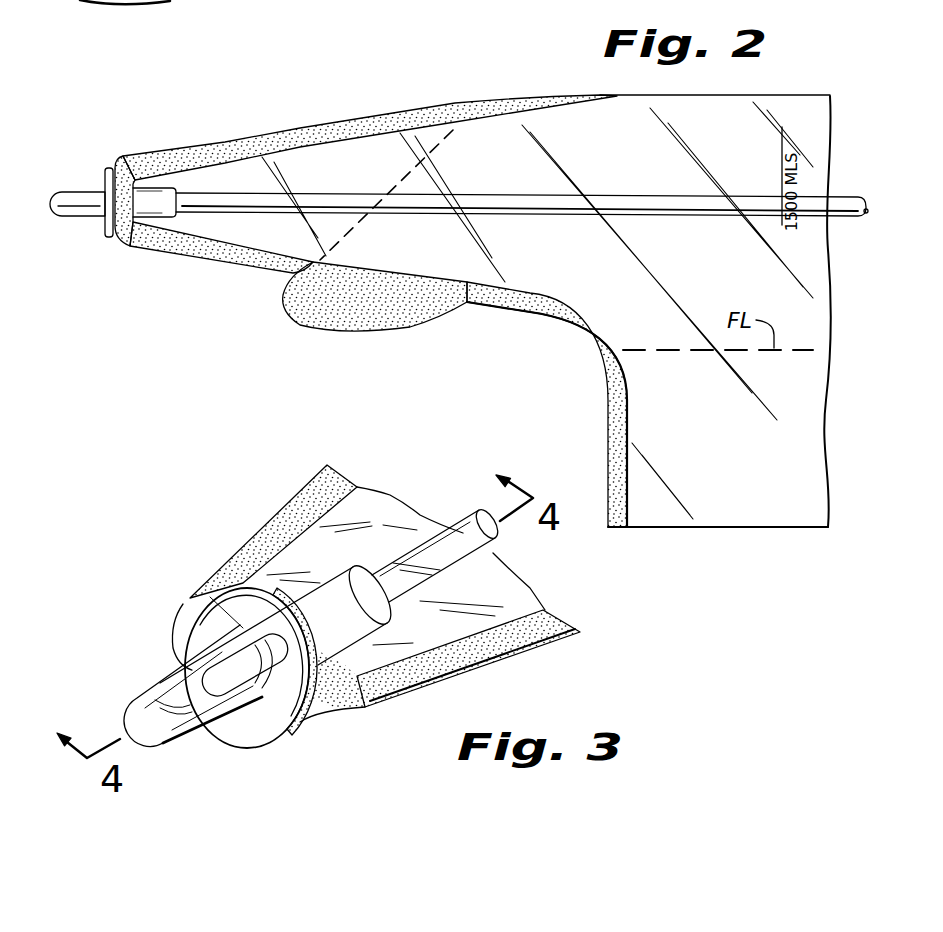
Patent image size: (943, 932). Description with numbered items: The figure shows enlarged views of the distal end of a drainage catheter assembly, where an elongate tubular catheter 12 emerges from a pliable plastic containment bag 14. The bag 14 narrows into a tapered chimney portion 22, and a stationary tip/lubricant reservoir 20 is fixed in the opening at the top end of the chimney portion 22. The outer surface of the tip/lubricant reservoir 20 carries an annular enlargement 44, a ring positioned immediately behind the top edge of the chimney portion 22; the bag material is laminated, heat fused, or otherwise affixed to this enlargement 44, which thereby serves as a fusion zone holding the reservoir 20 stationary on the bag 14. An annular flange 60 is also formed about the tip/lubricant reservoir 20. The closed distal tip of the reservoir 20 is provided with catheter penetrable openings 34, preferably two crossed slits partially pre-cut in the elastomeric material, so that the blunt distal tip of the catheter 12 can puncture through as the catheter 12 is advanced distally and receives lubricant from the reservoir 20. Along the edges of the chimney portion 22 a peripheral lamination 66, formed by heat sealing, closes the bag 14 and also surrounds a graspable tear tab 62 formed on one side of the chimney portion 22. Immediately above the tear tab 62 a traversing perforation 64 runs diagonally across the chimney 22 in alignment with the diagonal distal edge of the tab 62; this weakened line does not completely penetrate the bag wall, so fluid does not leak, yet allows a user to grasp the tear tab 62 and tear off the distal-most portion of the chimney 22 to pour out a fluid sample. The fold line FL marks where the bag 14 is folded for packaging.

In FIG. 2, the elongate tubular catheter 12 is at (843, 217).
In FIG. 3, the elongate tubular catheter 12 is at (468, 515).
In FIG. 3, the containment bag 14 is at (527, 583).
In FIG. 2, the tip/lubricant reservoir 20 is at (73, 200).
In FIG. 3, the tip/lubricant reservoir 20 is at (183, 604).
In FIG. 2, the chimney portion 22 is at (517, 89).
In FIG. 3, the chimney portion 22 is at (182, 563).
In FIG. 3, the catheter penetrable openings 34 is at (133, 708).
In FIG. 2, the annular enlargement 44 is at (116, 154).
In FIG. 2, the annular flange 60 is at (110, 236).
In FIG. 3, the annular flange 60 is at (286, 720).
In FIG. 2, the graspable tear tab 62 is at (292, 312).
In FIG. 2, the traversing perforation 64 is at (454, 132).
In FIG. 2, the peripheral lamination 66 is at (490, 110).
In FIG. 3, the peripheral lamination 66 is at (550, 630).